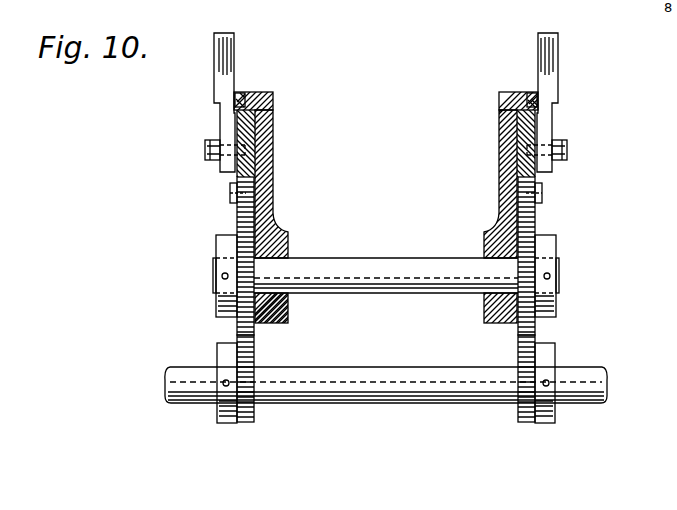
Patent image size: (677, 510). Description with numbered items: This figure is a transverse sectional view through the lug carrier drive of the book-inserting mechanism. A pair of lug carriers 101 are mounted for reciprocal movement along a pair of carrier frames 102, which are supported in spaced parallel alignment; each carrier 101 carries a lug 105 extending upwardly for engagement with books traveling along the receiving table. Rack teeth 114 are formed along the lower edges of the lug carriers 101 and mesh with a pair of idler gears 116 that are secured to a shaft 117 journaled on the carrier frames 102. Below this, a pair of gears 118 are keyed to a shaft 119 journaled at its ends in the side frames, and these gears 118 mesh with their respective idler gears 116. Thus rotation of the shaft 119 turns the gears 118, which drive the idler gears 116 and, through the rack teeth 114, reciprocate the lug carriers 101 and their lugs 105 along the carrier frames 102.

The lug carrier 101 is at (271, 131).
The carrier frame 102 is at (273, 106).
The lug 105 is at (230, 53).
The rack teeth 114 is at (232, 201).
The idler gear 116 is at (237, 220).
The shaft 117 is at (410, 240).
The gear 118 is at (256, 383).
The shaft 119 is at (383, 353).